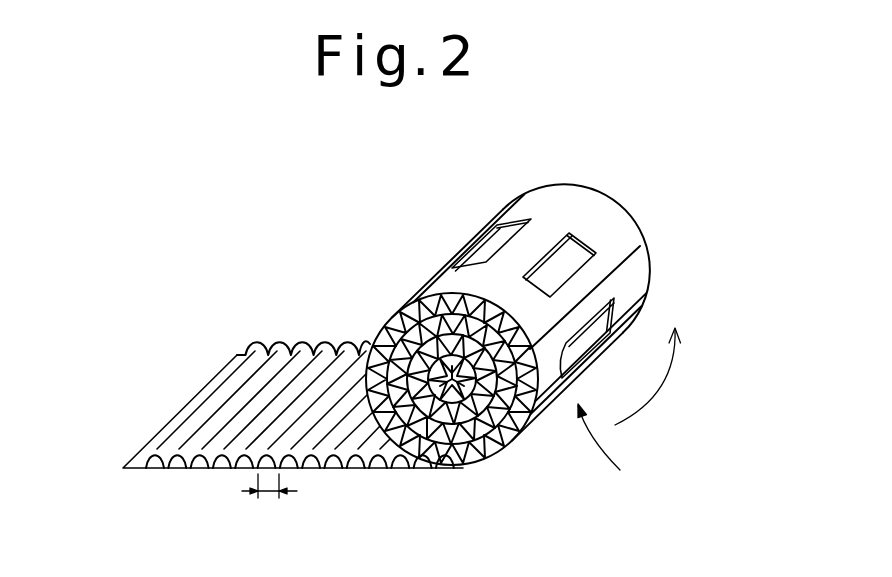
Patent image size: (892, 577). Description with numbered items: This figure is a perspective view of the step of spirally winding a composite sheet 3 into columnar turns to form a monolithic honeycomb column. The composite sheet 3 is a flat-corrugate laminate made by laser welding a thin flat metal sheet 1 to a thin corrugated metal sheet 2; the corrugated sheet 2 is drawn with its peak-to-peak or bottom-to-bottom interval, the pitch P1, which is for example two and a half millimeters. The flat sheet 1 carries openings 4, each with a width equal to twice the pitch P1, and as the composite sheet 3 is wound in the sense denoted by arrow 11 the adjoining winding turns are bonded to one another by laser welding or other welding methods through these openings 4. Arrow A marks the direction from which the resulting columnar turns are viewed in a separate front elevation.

The flat sheet 1 is at (358, 468).
The corrugated sheet 2 is at (258, 345).
The composite sheet 3 is at (188, 470).
The openings 4 is at (580, 245).
The arrow 11 is at (663, 387).
The arrow A is at (608, 449).
The pitch P1 is at (272, 493).